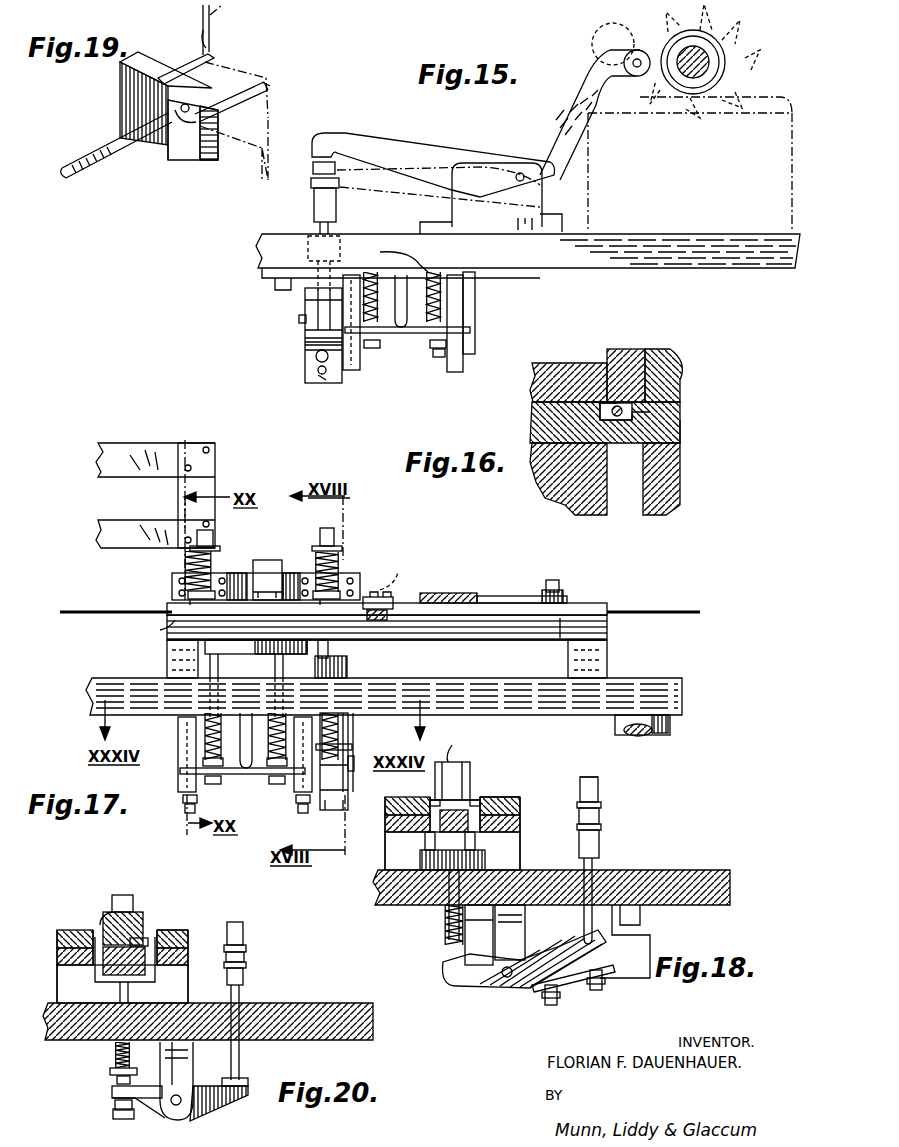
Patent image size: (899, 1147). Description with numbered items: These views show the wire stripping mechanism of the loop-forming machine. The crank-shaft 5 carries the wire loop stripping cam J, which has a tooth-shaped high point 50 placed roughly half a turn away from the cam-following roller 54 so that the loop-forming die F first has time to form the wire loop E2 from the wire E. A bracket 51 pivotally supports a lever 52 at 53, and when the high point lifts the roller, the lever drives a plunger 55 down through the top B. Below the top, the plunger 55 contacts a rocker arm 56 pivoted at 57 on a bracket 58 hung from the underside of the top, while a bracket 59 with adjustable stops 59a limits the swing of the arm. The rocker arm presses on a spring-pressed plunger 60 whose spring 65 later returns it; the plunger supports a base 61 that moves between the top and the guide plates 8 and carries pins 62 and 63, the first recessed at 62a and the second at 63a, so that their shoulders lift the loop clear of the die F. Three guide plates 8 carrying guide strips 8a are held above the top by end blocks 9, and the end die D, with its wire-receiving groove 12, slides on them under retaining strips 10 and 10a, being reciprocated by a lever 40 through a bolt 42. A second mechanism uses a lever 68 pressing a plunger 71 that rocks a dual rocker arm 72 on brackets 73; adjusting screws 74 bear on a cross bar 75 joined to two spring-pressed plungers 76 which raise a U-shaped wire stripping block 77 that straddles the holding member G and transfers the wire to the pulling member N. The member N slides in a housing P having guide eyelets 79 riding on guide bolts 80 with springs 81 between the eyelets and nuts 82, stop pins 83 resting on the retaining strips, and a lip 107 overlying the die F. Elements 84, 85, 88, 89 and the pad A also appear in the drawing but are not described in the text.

In FIG. 15, the crank-shaft 5 is at (700, 60).
In FIG. 15, the high point of cam 50 is at (735, 54).
In FIG. 15, the bracket 51 is at (544, 200).
In FIG. 15, the lever 52 is at (432, 156).
In FIG. 18, the lever 52 is at (600, 786).
In FIG. 15, the pivot 53 is at (518, 173).
In FIG. 15, the cam-following roller 54 is at (602, 34).
In FIG. 15, the plunger 55 is at (314, 204).
In FIG. 18, the plunger 55 is at (600, 840).
In FIG. 15, the rocker arm 56 is at (305, 301).
In FIG. 17, the rocker arm 56 is at (336, 810).
In FIG. 18, the rocker arm 56 is at (478, 984).
In FIG. 15, the pivot 57 is at (299, 319).
In FIG. 17, the pivot 57 is at (356, 762).
In FIG. 18, the pivot 57 is at (508, 978).
In FIG. 15, the bracket 58 is at (305, 338).
In FIG. 17, the bracket 58 is at (350, 748).
In FIG. 18, the bracket 58 is at (528, 938).
In FIG. 15, the bracket 59 is at (305, 358).
In FIG. 18, the bracket 59 is at (620, 978).
In FIG. 15, the adjustable stops 59a is at (318, 374).
In FIG. 18, the adjustable stops 59a is at (558, 1010).
In FIG. 19, the spring-pressed plunger 60 is at (138, 142).
In FIG. 18, the spring-pressed plunger 60 is at (447, 906).
In FIG. 19, the base 61 is at (185, 148).
In FIG. 17, the base 61 is at (348, 667).
In FIG. 18, the base 61 is at (420, 862).
In FIG. 19, the pin 62 is at (175, 68).
In FIG. 17, the pin 62 is at (330, 647).
In FIG. 18, the pin 62 is at (425, 841).
In FIG. 19, the recess 62a is at (205, 20).
In FIG. 19, the pin 63 is at (236, 110).
In FIG. 18, the pin 63 is at (476, 842).
In FIG. 19, the recess 63a is at (270, 85).
In FIG. 18, the spring 65 is at (443, 928).
In FIG. 20, the lever 68 is at (243, 928).
In FIG. 15, the plunger 71 is at (397, 305).
In FIG. 17, the plunger 71 is at (244, 748).
In FIG. 20, the plunger 71 is at (243, 974).
In FIG. 20, the dual rocker arm 72 is at (205, 1108).
In FIG. 15, the brackets 73 is at (352, 340).
In FIG. 17, the brackets 73 is at (178, 740).
In FIG. 20, the brackets 73 is at (180, 1078).
In FIG. 15, the adjusting screws 74 is at (437, 358).
In FIG. 17, the adjusting screws 74 is at (183, 806).
In FIG. 20, the adjusting screws 74 is at (113, 1116).
In FIG. 15, the cross bar 75 is at (410, 333).
In FIG. 17, the cross bar 75 is at (252, 774).
In FIG. 20, the cross bar 75 is at (110, 1072).
In FIG. 15, the spring-pressed plungers 76 is at (401, 255).
In FIG. 17, the spring-pressed plungers 76 is at (210, 660).
In FIG. 20, the spring-pressed plungers 76 is at (130, 992).
In FIG. 17, the wire stripping block 77 is at (278, 654).
In FIG. 20, the wire stripping block 77 is at (95, 978).
In FIG. 17, the guide eyelets 79 is at (216, 592).
In FIG. 17, the guide bolts 80 is at (196, 538).
In FIG. 17, the springs 81 is at (182, 564).
In FIG. 17, the nuts 82 is at (214, 548).
In FIG. 17, the stop pins 83 is at (188, 604).
In FIG. 17, the block 84 is at (267, 571).
In FIG. 17, the plate 85 is at (295, 573).
In FIG. 17, the plate 88 is at (138, 470).
In FIG. 17, the bracket 89 is at (210, 490).
In FIG. 17, the lip 107 is at (402, 572).
In FIG. 17, the lever 40 is at (448, 587).
In FIG. 17, the bolt 42 is at (557, 581).
In FIG. 17, the retaining strip 10 is at (585, 608).
In FIG. 18, the retaining strip 10 is at (390, 800).
In FIG. 20, the retaining strip 10 is at (60, 932).
In FIG. 16, the retaining strip 10a is at (552, 370).
In FIG. 18, the retaining strip 10a is at (518, 804).
In FIG. 20, the retaining strip 10a is at (180, 936).
In FIG. 16, the guide plates 8 is at (680, 470).
In FIG. 17, the guide plates 8 is at (607, 628).
In FIG. 18, the guide plates 8 is at (385, 826).
In FIG. 20, the guide plates 8 is at (57, 960).
In FIG. 16, the guide strips 8a is at (532, 414).
In FIG. 17, the guide strips 8a is at (506, 618).
In FIG. 18, the guide strips 8a is at (385, 812).
In FIG. 20, the guide strips 8a is at (57, 946).
In FIG. 17, the end blocks 9 is at (167, 654).
In FIG. 18, the end blocks 9 is at (520, 858).
In FIG. 20, the end blocks 9 is at (188, 994).
In FIG. 17, the wire-receiving groove 12 is at (560, 620).
In FIG. 17, the pad A is at (650, 740).
In FIG. 15, the top B is at (640, 264).
In FIG. 17, the top B is at (654, 680).
In FIG. 18, the top B is at (718, 898).
In FIG. 20, the top B is at (316, 1006).
In FIG. 16, the end die D is at (680, 433).
In FIG. 19, the wire E is at (206, 41).
In FIG. 16, the wire E is at (617, 417).
In FIG. 17, the wire E is at (380, 601).
In FIG. 18, the wire E is at (432, 802).
In FIG. 20, the wire E is at (146, 938).
In FIG. 19, the wire loop E2 is at (244, 121).
In FIG. 17, the loop-forming die F is at (380, 626).
In FIG. 17, the wire holding member G is at (160, 630).
In FIG. 18, the wire holding member G is at (452, 748).
In FIG. 20, the wire holding member G is at (108, 912).
In FIG. 15, the wire loop stripping cam J is at (722, 72).
In FIG. 16, the wire pulling member N is at (672, 368).
In FIG. 18, the wire pulling member N is at (470, 776).
In FIG. 20, the wire pulling member N is at (135, 902).
In FIG. 16, the housing P is at (624, 352).
In FIG. 17, the housing P is at (250, 572).
In FIG. 18, the housing P is at (470, 790).